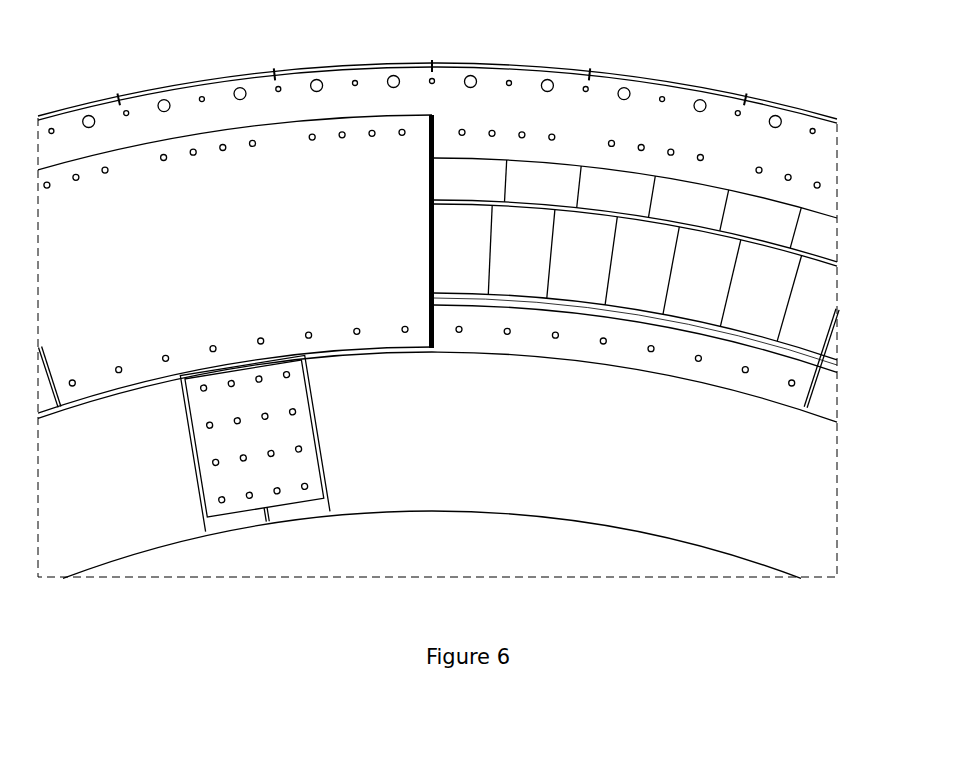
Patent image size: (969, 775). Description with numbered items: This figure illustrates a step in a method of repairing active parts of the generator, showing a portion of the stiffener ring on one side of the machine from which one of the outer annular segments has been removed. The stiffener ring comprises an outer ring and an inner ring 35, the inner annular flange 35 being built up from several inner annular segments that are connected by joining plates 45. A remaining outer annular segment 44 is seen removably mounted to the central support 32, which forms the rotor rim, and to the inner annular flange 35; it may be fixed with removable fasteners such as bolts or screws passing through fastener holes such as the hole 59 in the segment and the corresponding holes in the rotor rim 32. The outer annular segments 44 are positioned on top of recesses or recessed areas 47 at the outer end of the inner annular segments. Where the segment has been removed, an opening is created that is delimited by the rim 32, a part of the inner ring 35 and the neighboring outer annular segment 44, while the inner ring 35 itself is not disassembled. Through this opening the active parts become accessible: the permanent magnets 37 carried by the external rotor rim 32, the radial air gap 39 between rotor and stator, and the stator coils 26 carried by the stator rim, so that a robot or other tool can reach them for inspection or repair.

The central support 32 is at (215, 102).
The outer annular segment 44 is at (276, 143).
The fastener hole 59 is at (164, 152).
The permanent magnets 37 is at (823, 232).
The radial air gap 39 is at (836, 262).
The stator coils 26 is at (807, 290).
The recessed area 47 is at (780, 392).
The joining plate 45 is at (292, 492).
The inner annular flange 35 is at (565, 490).